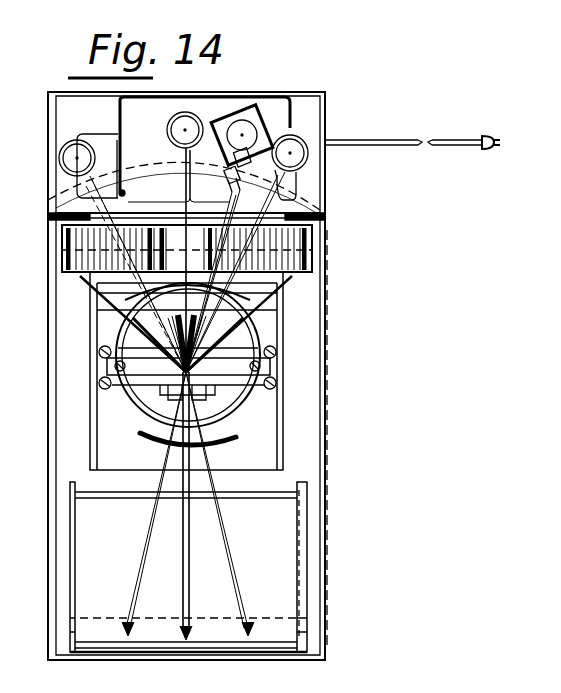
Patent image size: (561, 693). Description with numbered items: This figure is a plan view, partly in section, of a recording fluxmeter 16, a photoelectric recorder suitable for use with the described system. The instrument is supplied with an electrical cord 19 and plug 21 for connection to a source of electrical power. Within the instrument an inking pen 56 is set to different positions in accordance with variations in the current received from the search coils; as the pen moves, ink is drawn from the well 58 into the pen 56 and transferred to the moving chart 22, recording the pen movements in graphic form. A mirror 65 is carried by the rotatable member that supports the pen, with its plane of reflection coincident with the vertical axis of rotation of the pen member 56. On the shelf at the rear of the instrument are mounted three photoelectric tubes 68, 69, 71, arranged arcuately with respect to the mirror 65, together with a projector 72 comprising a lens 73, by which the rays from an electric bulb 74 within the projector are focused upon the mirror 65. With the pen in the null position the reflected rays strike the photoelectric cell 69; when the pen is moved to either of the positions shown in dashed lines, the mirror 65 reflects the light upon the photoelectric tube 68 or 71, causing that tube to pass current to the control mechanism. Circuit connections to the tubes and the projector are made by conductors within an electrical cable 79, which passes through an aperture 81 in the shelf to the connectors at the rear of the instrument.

The recording fluxmeter 16 is at (320, 305).
The electrical cord 19 is at (372, 143).
The plug 21 is at (486, 146).
The moving chart 22 is at (280, 570).
The inking pen 56 is at (186, 565).
The ink well 58 is at (232, 442).
The mirror 65 is at (110, 358).
The photoelectric tube 68 is at (68, 150).
The photoelectric tube 69 is at (200, 115).
The photoelectric tube 71 is at (302, 143).
The projector 72 is at (262, 114).
The lens 73 is at (227, 183).
The electric bulb 74 is at (255, 128).
The electrical cable 79 is at (118, 115).
The aperture 81 is at (126, 192).